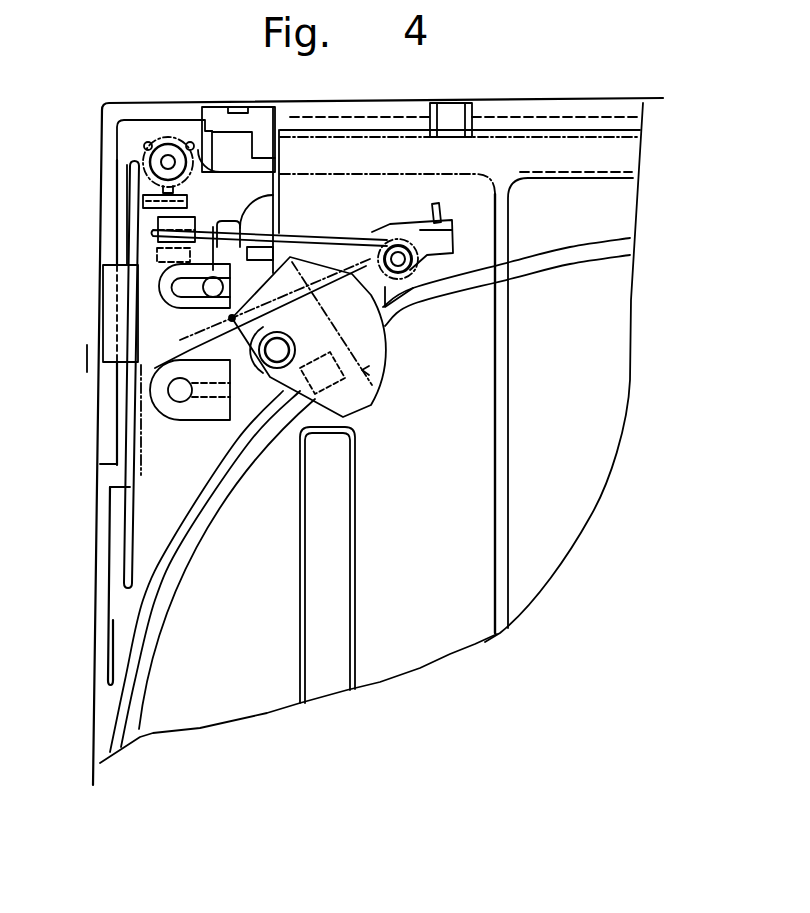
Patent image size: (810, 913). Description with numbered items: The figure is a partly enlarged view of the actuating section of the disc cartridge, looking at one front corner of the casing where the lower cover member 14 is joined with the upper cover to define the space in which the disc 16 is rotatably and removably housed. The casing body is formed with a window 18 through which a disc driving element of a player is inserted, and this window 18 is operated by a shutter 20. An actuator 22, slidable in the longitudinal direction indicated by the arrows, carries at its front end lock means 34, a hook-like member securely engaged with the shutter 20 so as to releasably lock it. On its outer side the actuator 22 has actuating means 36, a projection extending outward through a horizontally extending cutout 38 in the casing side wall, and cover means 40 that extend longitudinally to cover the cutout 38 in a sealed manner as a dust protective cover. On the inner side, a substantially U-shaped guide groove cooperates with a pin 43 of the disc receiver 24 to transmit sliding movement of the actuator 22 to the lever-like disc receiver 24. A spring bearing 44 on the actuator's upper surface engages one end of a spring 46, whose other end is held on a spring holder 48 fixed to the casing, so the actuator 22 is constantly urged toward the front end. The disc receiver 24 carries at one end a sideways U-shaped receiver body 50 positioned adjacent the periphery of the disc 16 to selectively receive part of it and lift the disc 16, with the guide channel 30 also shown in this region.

The lower cover member 14 is at (100, 633).
The disc 16 is at (143, 712).
The window 18 is at (510, 387).
The shutter 20 is at (456, 102).
The actuator 22 is at (227, 148).
The disc receiver 24 is at (382, 368).
The guide channel 30 is at (302, 541).
The lock means 34 is at (264, 108).
The actuating means 36 is at (106, 305).
The cutout 38 is at (118, 418).
The cover means 40 is at (135, 175).
The pin 43 is at (224, 288).
The spring bearing 44 is at (150, 222).
The spring 46 is at (344, 240).
The spring holder 48 is at (398, 250).
The receiver body 50 is at (374, 400).